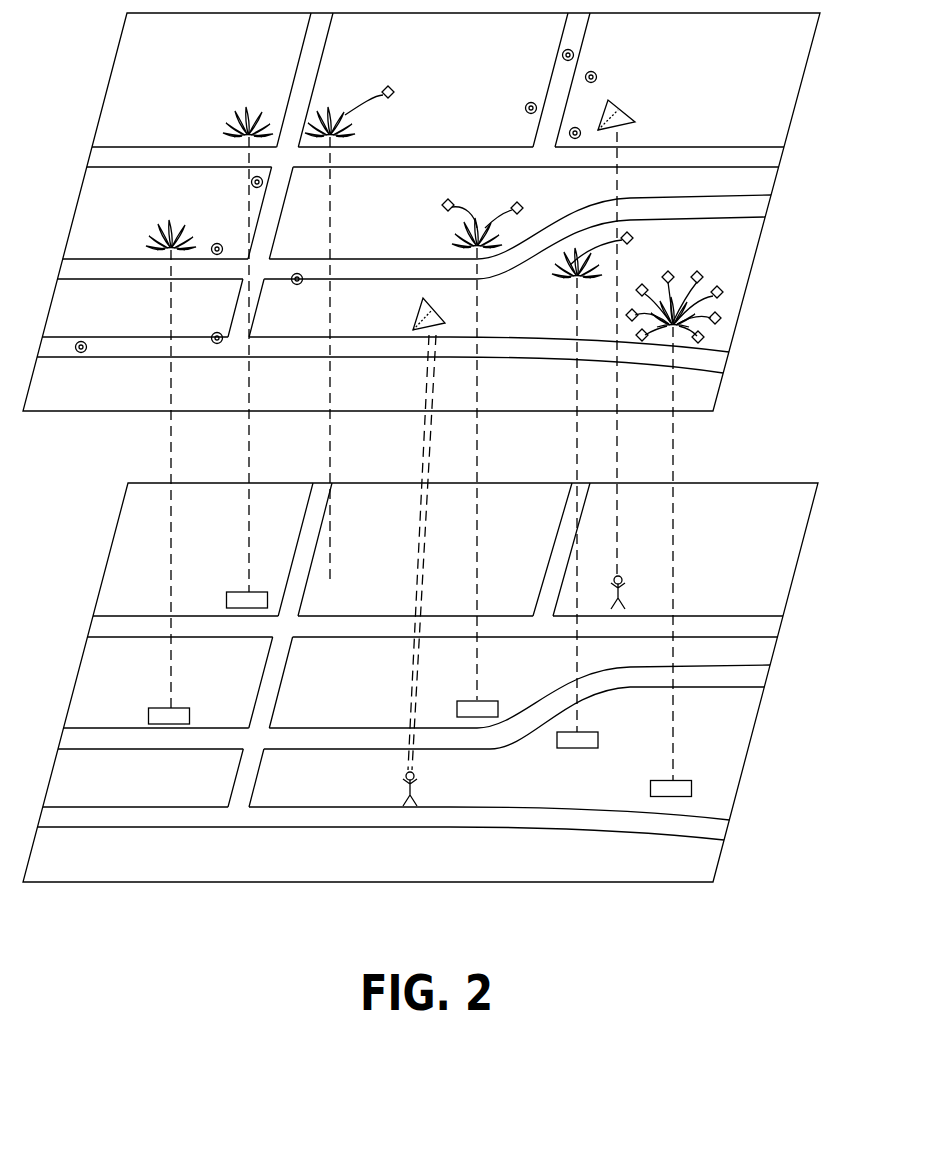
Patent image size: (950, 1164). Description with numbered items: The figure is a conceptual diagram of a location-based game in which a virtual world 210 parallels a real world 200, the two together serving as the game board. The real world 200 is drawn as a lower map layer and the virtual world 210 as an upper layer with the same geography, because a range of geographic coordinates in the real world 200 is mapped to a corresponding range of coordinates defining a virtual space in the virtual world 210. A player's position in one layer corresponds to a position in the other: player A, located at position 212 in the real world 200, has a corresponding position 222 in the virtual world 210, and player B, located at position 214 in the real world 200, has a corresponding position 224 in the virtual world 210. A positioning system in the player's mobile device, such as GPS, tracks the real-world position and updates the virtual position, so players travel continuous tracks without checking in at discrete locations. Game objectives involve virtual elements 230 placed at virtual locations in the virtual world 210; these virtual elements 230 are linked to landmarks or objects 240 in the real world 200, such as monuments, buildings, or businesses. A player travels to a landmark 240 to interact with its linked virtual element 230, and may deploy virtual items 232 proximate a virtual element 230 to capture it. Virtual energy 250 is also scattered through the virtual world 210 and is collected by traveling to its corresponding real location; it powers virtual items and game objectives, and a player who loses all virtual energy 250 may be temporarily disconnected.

The real world 200 is at (787, 590).
The virtual world 210 is at (788, 125).
The position of player A in the real world 212 is at (405, 775).
The position of player B in the real world 214 is at (622, 578).
The corresponding position of player A in the virtual world 222 is at (446, 323).
The corresponding position of player B in the virtual world 224 is at (633, 120).
The virtual elements 230 is at (248, 110).
The virtual items 232 is at (394, 88).
The real world landmarks or objects 240 is at (243, 592).
The virtual energy 250 is at (596, 75).